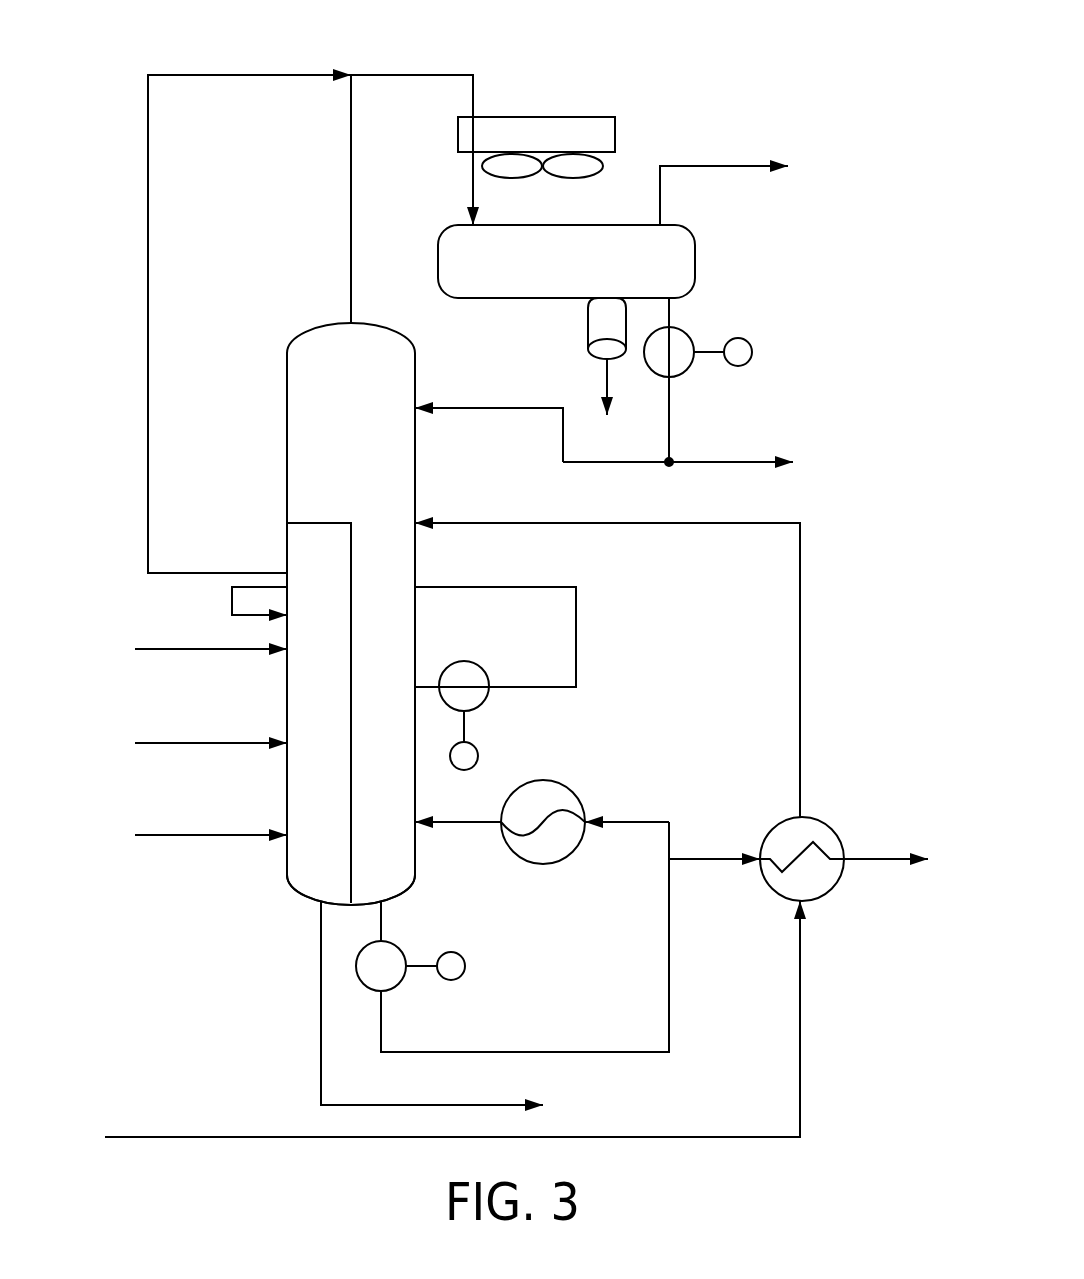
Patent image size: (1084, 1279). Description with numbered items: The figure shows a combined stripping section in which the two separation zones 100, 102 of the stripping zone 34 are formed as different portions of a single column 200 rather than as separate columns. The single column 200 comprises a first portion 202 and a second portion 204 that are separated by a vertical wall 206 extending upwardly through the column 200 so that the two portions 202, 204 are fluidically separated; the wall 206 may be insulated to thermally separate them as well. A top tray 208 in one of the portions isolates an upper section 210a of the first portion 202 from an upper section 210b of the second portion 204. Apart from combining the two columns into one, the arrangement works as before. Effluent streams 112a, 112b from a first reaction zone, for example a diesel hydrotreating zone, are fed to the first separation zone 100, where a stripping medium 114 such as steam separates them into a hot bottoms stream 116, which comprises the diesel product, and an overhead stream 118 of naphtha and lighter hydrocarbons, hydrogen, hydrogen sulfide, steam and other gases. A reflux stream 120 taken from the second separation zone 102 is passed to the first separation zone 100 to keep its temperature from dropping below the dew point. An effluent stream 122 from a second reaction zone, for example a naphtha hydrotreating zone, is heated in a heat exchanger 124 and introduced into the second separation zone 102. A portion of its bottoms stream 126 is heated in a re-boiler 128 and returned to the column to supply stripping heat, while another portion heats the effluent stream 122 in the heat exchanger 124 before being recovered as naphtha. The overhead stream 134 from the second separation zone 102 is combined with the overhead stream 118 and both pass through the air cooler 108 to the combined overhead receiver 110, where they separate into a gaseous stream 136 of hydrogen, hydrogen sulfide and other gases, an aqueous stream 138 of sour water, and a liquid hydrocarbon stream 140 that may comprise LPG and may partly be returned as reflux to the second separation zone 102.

The stripping zone 34 is at (848, 50).
The first separation zone 100 is at (275, 785).
The second separation zone 102 is at (387, 317).
The air cooler 108 is at (589, 116).
The combined overhead receiver 110 is at (696, 262).
The effluent stream 112a is at (168, 743).
The effluent stream 112b is at (168, 649).
The stripping medium 114 is at (168, 835).
The hot bottoms stream 116 is at (322, 1062).
The overhead stream 118 is at (148, 263).
The reflux stream 120 is at (232, 599).
The effluent stream 122 is at (800, 1085).
The heat exchanger 124 is at (822, 820).
The bottoms stream 126 is at (572, 1052).
The re-boiler 128 is at (543, 778).
The overhead stream 134 is at (351, 203).
The gaseous stream 136 is at (723, 165).
The aqueous stream 138 is at (607, 377).
The liquid hydrocarbon stream 140 is at (669, 418).
The single column 200 is at (297, 885).
The first portion 202 is at (305, 867).
The second portion 204 is at (387, 863).
The vertical wall 206 is at (350, 695).
The top tray 208 is at (313, 522).
The upper section of the first portion 210a is at (315, 549).
The upper section of the second portion 210b is at (380, 395).